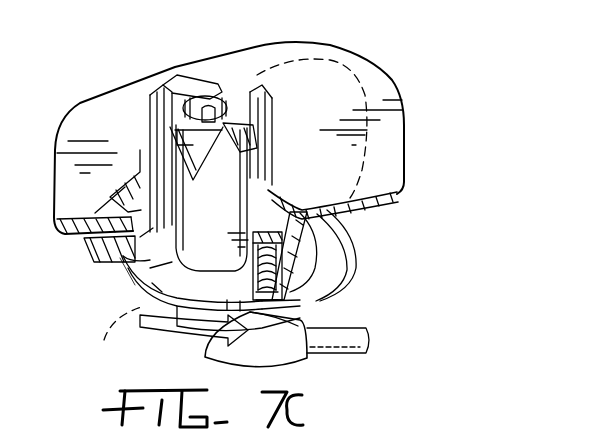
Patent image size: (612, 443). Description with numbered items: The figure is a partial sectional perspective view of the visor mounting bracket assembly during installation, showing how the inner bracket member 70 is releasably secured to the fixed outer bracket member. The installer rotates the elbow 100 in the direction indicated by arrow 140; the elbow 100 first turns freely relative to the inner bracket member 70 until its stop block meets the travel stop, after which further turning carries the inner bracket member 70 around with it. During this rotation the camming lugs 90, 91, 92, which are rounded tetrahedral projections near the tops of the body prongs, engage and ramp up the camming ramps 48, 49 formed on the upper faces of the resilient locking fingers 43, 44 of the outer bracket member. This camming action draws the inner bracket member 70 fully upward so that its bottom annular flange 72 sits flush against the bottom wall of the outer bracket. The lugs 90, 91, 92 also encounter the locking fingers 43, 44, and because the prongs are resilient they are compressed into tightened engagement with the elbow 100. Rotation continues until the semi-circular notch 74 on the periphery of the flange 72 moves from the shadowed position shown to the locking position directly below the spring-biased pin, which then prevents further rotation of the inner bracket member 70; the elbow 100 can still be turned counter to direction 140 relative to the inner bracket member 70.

The locking finger 43 is at (253, 178).
The locking finger 44 is at (148, 124).
The camming ramp 48 is at (253, 117).
The camming ramp 49 is at (198, 77).
The inner bracket member 70 is at (121, 272).
The bottom annular flange 72 is at (123, 262).
The semi-circular notch 74 is at (115, 328).
The camming lug 90 is at (237, 100).
The camming lug 91 is at (181, 95).
The camming lug 92 is at (170, 135).
The elbow 100 is at (290, 326).
The arrow 140 is at (170, 330).